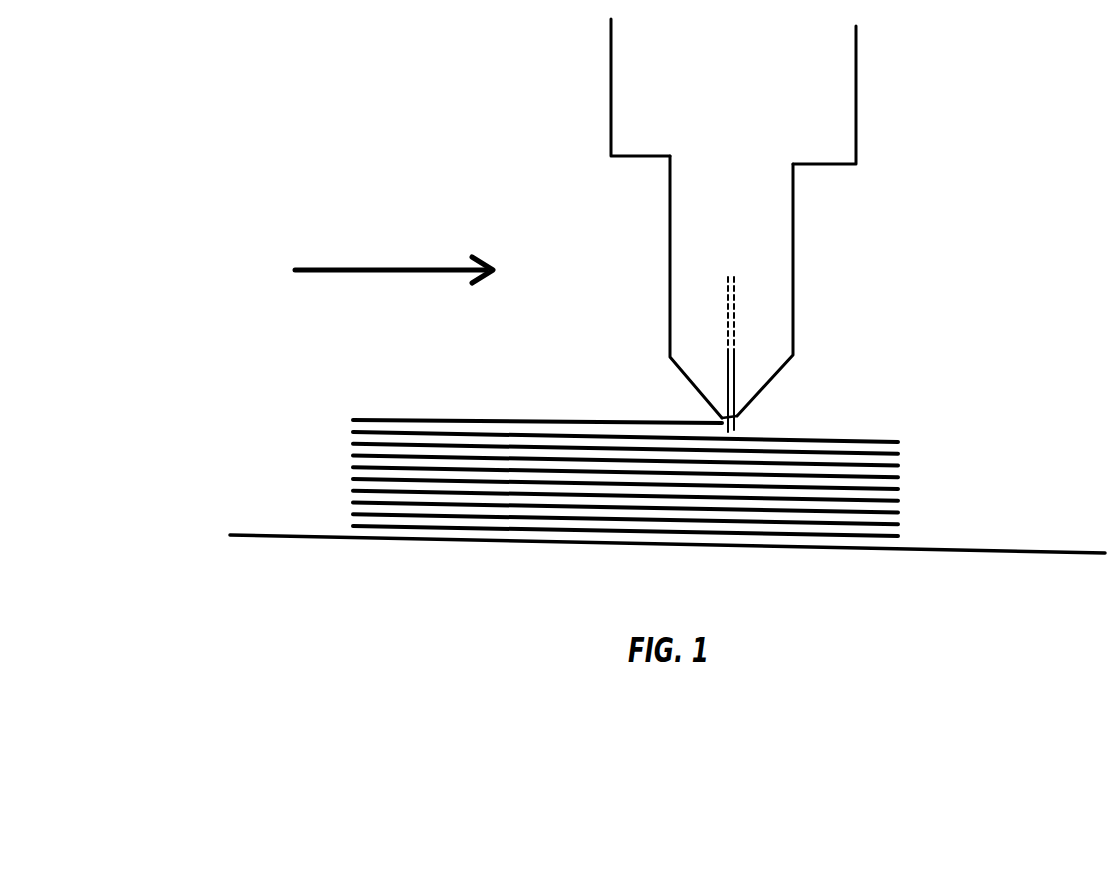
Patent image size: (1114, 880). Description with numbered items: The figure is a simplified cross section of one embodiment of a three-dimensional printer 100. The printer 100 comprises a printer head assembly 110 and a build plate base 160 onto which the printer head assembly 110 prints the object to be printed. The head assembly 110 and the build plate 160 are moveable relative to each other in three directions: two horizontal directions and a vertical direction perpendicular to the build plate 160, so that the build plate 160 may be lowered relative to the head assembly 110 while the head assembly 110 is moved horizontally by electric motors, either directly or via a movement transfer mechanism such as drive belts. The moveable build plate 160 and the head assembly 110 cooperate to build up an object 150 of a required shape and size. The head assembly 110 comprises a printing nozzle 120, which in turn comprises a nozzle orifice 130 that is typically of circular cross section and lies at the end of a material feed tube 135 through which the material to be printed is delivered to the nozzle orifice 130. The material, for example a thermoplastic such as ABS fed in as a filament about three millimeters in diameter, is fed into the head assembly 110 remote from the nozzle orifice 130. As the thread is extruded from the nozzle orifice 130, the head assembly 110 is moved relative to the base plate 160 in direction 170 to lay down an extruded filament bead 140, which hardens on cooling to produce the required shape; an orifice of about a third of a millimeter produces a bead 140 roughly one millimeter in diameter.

The 3D printer 100 is at (460, 55).
The printer head assembly 110 is at (856, 103).
The printing nozzle 120 is at (793, 250).
The nozzle orifice 130 is at (740, 410).
The material feed tube 135 is at (729, 275).
The extruded filament bead 140 is at (513, 420).
The object 150 is at (885, 437).
The build plate base 160 is at (945, 547).
The direction 170 is at (390, 263).